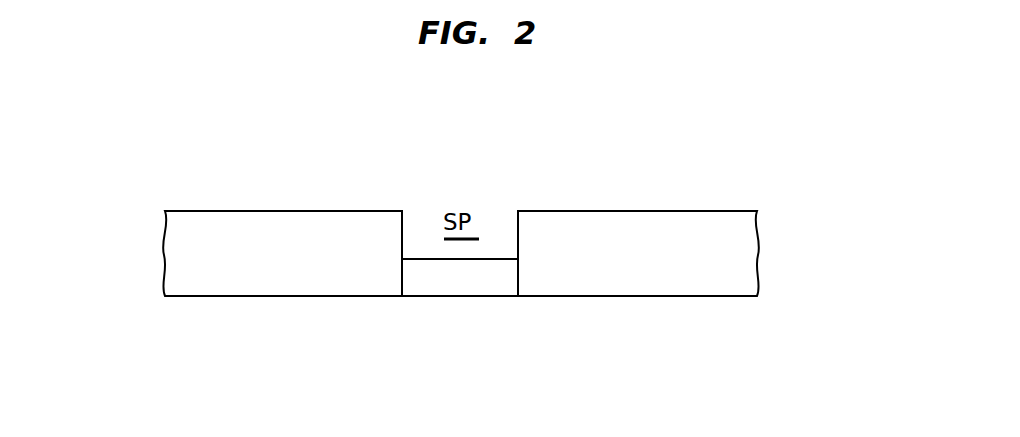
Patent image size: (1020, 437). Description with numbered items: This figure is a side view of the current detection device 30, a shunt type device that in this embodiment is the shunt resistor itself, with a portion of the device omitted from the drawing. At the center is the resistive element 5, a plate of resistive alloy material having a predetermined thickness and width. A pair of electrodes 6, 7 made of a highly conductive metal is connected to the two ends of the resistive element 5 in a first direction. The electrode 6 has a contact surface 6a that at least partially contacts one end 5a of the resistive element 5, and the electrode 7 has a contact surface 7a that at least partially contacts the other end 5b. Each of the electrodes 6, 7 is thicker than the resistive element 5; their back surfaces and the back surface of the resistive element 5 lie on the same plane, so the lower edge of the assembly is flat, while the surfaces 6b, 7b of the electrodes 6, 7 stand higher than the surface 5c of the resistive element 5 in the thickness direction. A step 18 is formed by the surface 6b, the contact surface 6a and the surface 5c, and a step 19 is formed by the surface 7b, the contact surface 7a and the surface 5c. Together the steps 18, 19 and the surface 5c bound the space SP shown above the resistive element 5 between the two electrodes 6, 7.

The current detection device 30 is at (736, 175).
The resistive element 5 is at (455, 276).
The one end of the resistive element 5a is at (402, 276).
The other end of the resistive element 5b is at (518, 276).
The surface of the resistive element 5c is at (430, 258).
The electrode 6 is at (213, 299).
The contact surface 6a is at (403, 225).
The surface of the electrode 6b is at (268, 211).
The electrode 7 is at (718, 299).
The contact surface 7a is at (517, 225).
The surface of the electrode 7b is at (625, 211).
The step 18 is at (412, 219).
The step 19 is at (510, 219).